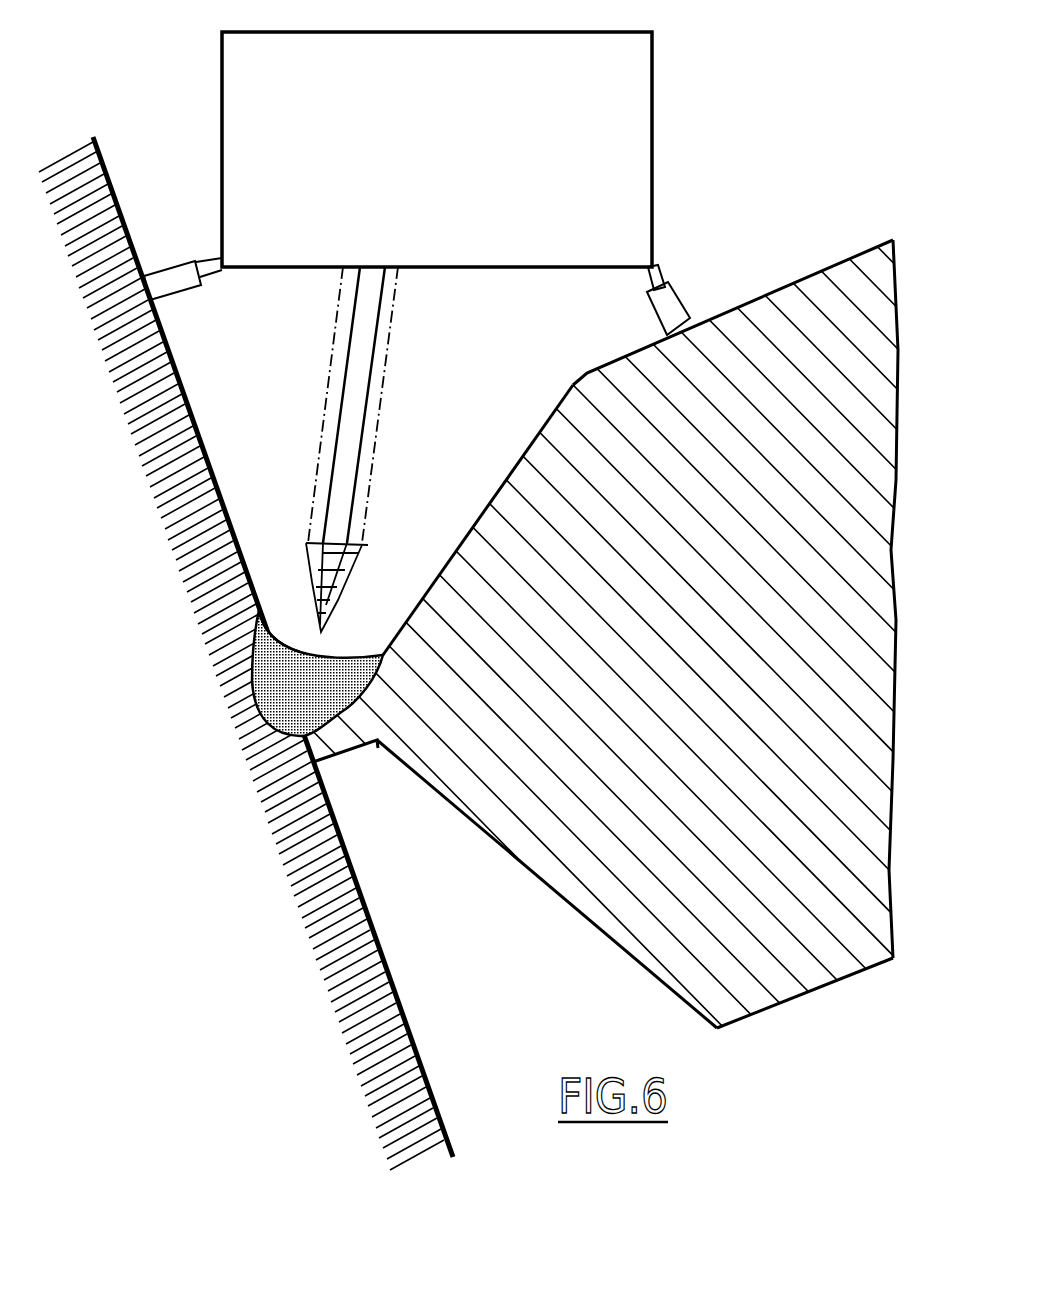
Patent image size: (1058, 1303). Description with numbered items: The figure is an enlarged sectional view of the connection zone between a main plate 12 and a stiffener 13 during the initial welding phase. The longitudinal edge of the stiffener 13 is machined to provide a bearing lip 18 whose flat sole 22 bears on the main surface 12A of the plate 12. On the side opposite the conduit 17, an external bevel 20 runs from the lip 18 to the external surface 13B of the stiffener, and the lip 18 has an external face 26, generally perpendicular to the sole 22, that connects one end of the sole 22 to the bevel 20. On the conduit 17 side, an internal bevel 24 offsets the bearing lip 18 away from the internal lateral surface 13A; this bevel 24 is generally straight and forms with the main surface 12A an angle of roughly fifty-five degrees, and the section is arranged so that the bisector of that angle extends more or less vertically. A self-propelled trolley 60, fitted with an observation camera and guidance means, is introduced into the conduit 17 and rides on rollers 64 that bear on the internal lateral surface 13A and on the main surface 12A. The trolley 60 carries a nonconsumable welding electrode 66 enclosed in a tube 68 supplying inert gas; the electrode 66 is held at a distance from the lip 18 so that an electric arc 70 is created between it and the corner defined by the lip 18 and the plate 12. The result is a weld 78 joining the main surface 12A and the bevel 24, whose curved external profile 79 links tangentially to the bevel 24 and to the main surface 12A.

The plate 12 is at (190, 527).
The main surface 12A is at (212, 452).
The stiffener 13 is at (850, 690).
The internal lateral surface 13A is at (804, 278).
The external surface 13B is at (783, 1002).
The conduit 17 is at (749, 139).
The lip 18 is at (323, 777).
The external bevel 20 is at (588, 919).
The sole 22 is at (308, 733).
The internal bevel 24 is at (468, 537).
The external face 26 is at (349, 753).
The self-propelled trolley 60 is at (437, 149).
The rollers 64 is at (181, 267).
The welding electrode 66 is at (362, 447).
The tube 68 is at (392, 362).
The electric arc 70 is at (323, 640).
The weld 78 is at (285, 691).
The curved external profile 79 is at (278, 623).